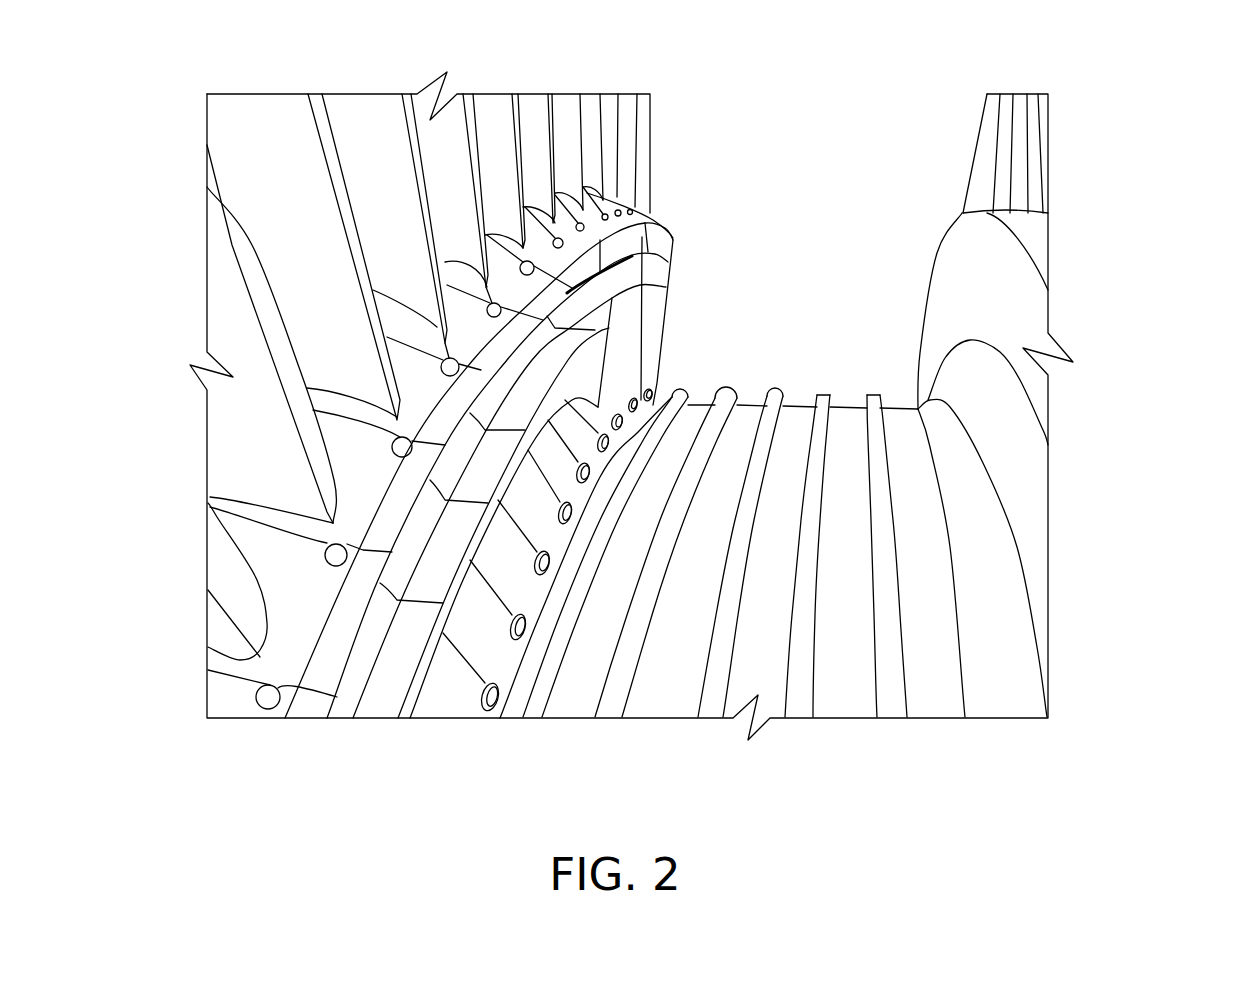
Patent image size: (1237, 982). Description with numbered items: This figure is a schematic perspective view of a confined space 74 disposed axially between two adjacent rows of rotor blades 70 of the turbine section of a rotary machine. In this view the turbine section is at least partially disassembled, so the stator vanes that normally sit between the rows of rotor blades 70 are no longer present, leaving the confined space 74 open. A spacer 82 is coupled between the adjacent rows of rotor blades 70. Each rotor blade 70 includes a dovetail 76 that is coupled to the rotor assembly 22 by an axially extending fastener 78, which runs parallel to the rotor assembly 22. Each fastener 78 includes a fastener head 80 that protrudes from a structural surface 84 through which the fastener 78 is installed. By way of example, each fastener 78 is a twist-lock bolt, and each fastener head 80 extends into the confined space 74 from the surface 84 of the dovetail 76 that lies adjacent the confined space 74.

The rotor assembly 22 is at (1097, 599).
The rotor blades 70 is at (492, 105).
The confined space 74 is at (803, 270).
The dovetail 76 is at (657, 297).
The structural surface 84 is at (610, 350).
The fastener 78 is at (500, 505).
The fastener head 80 is at (572, 505).
The spacer 82 is at (852, 677).